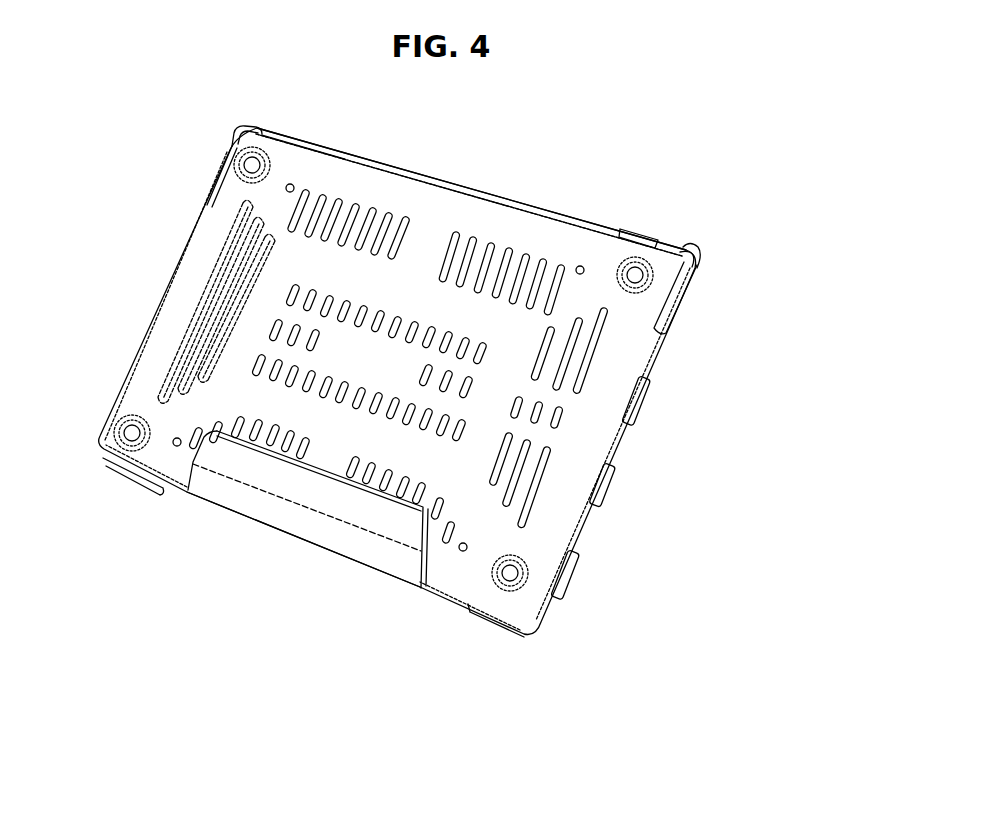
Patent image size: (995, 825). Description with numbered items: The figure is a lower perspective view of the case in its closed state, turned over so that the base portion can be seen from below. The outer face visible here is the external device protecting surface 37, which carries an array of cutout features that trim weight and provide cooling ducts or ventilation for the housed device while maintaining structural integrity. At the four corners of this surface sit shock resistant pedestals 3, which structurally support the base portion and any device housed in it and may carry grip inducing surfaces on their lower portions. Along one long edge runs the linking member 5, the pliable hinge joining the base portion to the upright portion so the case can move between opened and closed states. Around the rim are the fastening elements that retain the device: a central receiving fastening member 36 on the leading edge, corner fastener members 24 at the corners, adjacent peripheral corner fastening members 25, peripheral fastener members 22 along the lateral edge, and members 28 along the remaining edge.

The shock resistant pedestal 3 is at (250, 165).
The linking member 5 is at (290, 517).
The peripheral fastener member 22 is at (613, 477).
The corner fastener member 24 is at (238, 128).
The peripheral corner fastening member 25 is at (280, 133).
The member 28 is at (122, 466).
The central receiving fastening member 36 is at (446, 187).
The external device protecting surface 37 is at (420, 337).